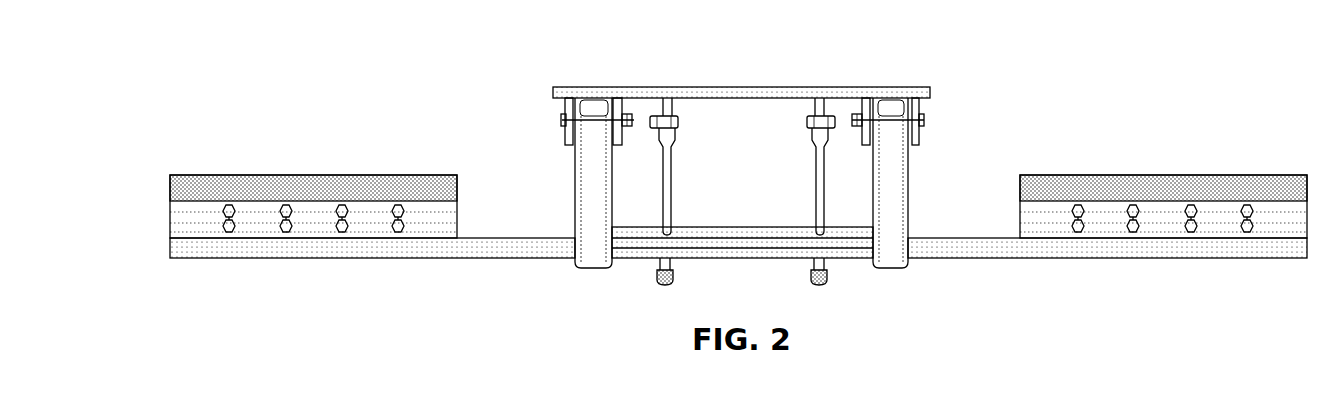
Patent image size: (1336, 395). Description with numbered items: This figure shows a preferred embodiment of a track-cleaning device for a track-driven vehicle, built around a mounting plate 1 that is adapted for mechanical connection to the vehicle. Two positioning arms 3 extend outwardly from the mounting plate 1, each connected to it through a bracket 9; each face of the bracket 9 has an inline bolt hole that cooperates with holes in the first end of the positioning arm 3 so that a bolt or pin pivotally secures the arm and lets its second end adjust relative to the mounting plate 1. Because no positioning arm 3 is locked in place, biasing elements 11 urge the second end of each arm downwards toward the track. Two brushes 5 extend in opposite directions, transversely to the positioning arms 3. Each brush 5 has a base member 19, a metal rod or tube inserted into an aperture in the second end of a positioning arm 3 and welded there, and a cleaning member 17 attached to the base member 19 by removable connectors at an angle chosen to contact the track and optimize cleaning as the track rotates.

The mounting plate 1 is at (932, 90).
The positioning arm 3 is at (588, 266).
The brush 5 is at (460, 165).
The bracket 9 is at (617, 97).
The biasing element 11 is at (817, 182).
The cleaning member 17 is at (440, 188).
The base member 19 is at (517, 253).